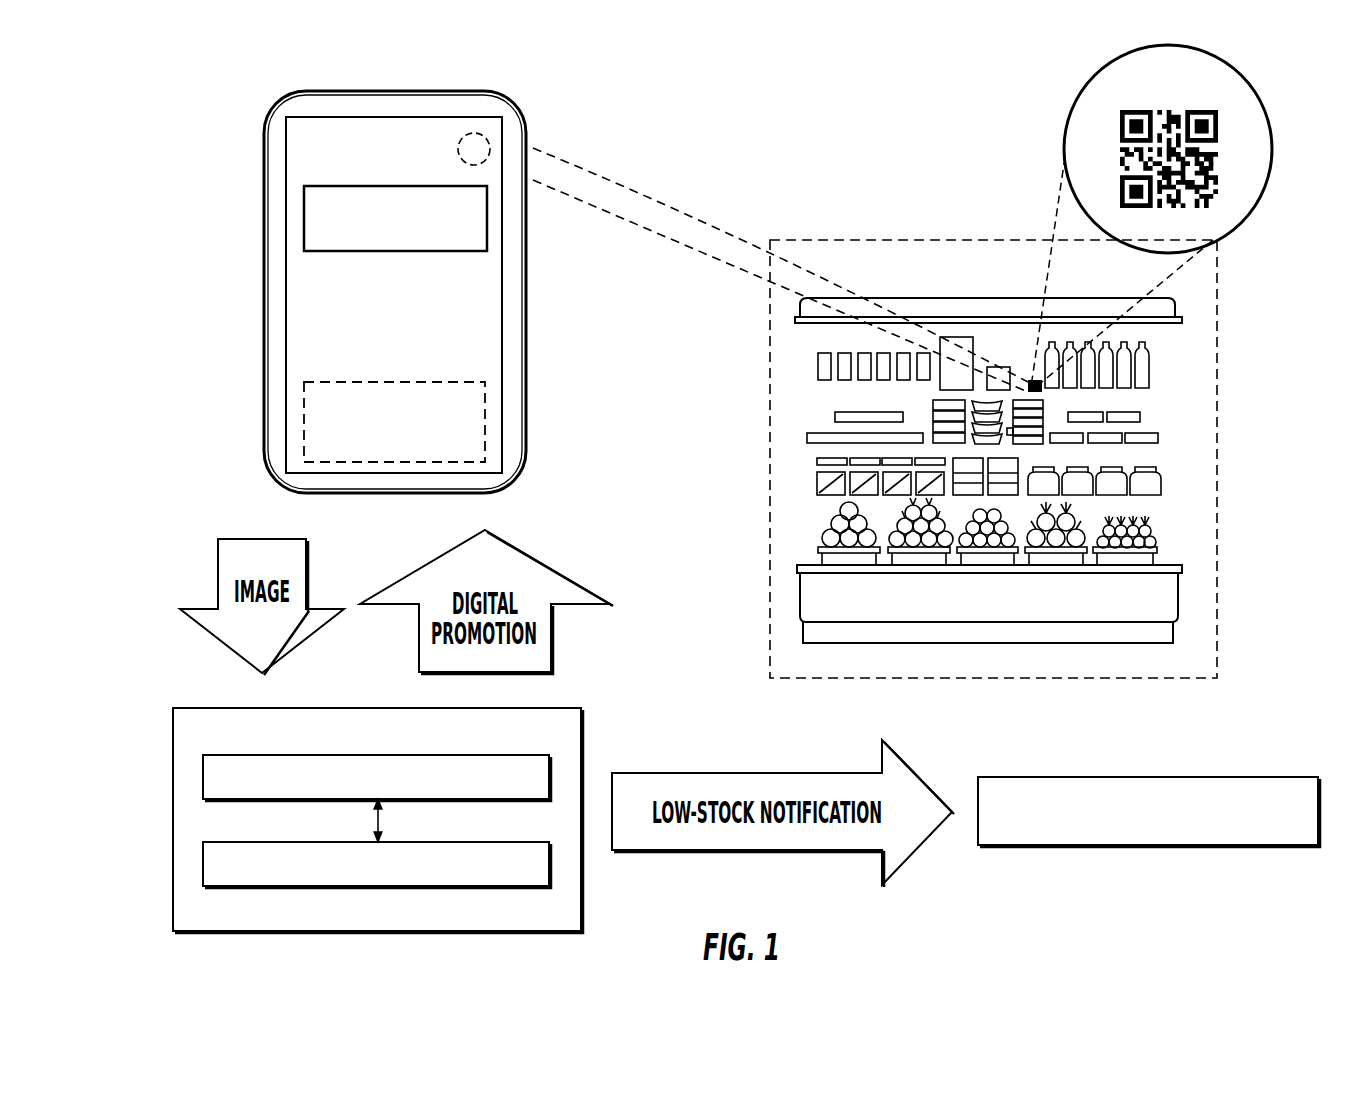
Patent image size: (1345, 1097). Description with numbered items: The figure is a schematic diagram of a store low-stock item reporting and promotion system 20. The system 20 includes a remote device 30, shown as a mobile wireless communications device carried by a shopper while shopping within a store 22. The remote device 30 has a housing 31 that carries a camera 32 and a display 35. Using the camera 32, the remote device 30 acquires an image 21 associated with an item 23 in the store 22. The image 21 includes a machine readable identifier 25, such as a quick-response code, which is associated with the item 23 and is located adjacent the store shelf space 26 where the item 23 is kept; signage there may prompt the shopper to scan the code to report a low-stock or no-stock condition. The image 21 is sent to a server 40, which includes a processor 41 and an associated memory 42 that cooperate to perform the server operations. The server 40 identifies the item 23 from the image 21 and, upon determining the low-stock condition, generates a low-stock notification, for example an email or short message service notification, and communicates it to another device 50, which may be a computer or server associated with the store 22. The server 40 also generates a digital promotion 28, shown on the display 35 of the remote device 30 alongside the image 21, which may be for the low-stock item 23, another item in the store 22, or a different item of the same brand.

The store low-stock item reporting and promotion system 20 is at (241, 84).
The remote device 30 is at (479, 91).
The housing 31 is at (263, 158).
The display 35 is at (297, 173).
The camera 32 is at (492, 149).
The image 21 is at (487, 231).
The digital promotion 28 is at (487, 419).
The store 22 is at (807, 240).
The item 23 is at (993, 365).
The machine readable identifier 25 is at (1040, 390).
The store shelf space 26 is at (1017, 377).
The server 40 is at (184, 705).
The processor 41 is at (203, 781).
The memory 42 is at (203, 872).
The another device 50 is at (1113, 777).